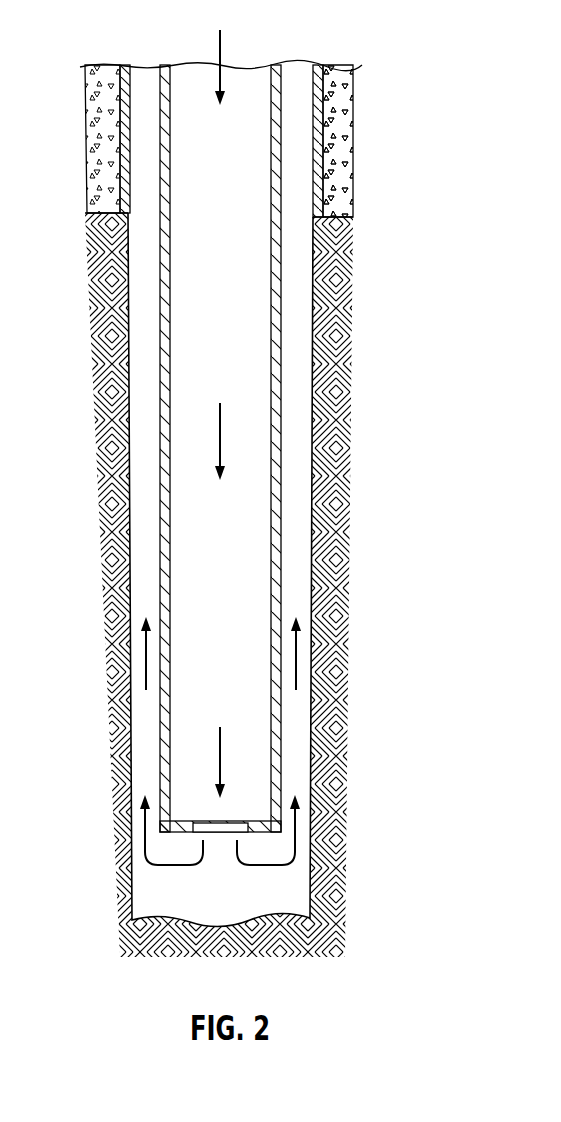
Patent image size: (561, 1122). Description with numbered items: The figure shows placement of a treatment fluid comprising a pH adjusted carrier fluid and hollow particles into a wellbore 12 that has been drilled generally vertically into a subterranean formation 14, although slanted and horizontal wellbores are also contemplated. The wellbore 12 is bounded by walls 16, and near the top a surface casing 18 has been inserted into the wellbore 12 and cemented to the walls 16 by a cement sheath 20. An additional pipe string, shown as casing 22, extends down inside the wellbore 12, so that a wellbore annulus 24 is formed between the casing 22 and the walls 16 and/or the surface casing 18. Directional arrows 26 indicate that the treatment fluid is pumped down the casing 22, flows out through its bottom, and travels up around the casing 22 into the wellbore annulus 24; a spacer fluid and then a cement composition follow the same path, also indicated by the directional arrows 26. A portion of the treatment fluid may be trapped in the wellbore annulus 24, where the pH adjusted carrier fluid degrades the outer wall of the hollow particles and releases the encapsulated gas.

The wellbore 12 is at (312, 692).
The subterranean formation 14 is at (128, 541).
The walls 16 is at (353, 120).
The surface casing 18 is at (322, 200).
The cement sheath 20 is at (347, 155).
The casing 22 is at (160, 380).
The wellbore annulus 24 is at (150, 472).
The directional arrows 26 is at (222, 53).